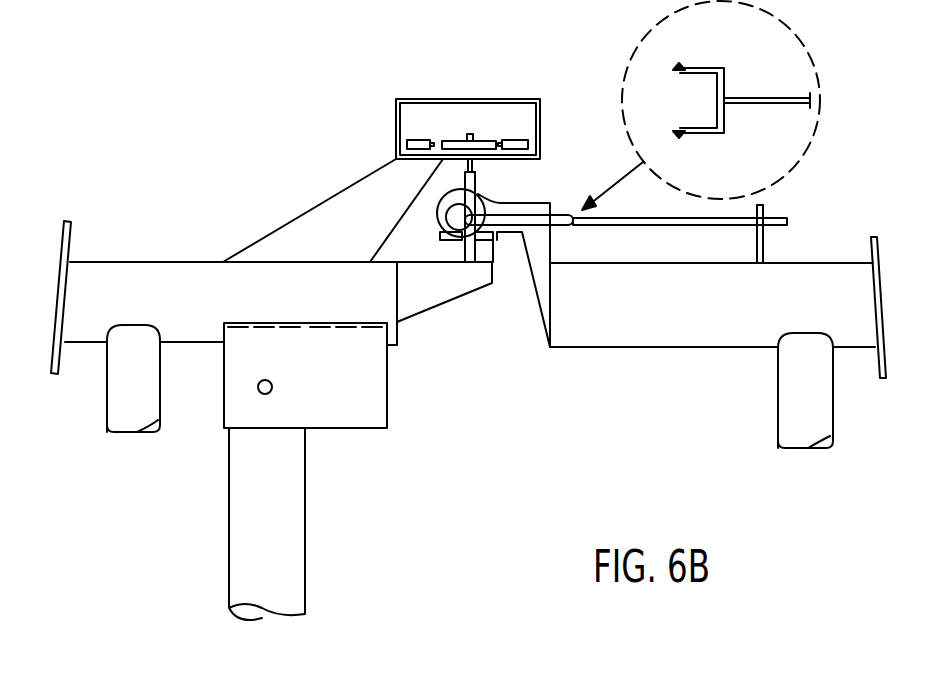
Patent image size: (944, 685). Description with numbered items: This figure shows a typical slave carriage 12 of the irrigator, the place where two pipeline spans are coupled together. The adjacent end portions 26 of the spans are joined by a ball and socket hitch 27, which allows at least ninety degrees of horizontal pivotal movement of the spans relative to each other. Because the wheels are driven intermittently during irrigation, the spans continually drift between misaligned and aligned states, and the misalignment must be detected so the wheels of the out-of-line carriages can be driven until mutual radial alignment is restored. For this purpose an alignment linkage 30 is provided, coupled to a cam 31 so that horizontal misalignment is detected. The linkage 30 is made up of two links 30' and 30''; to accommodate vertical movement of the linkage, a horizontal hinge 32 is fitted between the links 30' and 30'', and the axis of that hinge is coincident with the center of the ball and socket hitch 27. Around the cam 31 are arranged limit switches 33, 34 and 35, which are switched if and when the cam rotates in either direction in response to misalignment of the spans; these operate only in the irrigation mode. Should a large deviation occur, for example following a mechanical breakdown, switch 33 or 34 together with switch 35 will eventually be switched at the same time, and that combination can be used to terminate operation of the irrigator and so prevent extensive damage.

The slave carriage 12 is at (160, 538).
The adjacent end portions 26 is at (90, 323).
The ball and socket hitch 27 is at (425, 211).
The alignment linkage 30 is at (495, 303).
The link 30' is at (511, 210).
The link 30'' is at (637, 176).
The cam 31 is at (487, 133).
The horizontal hinge 32 is at (447, 236).
The limit switch 33 is at (376, 85).
The limit switch 34 is at (408, 139).
The limit switch 35 is at (520, 140).